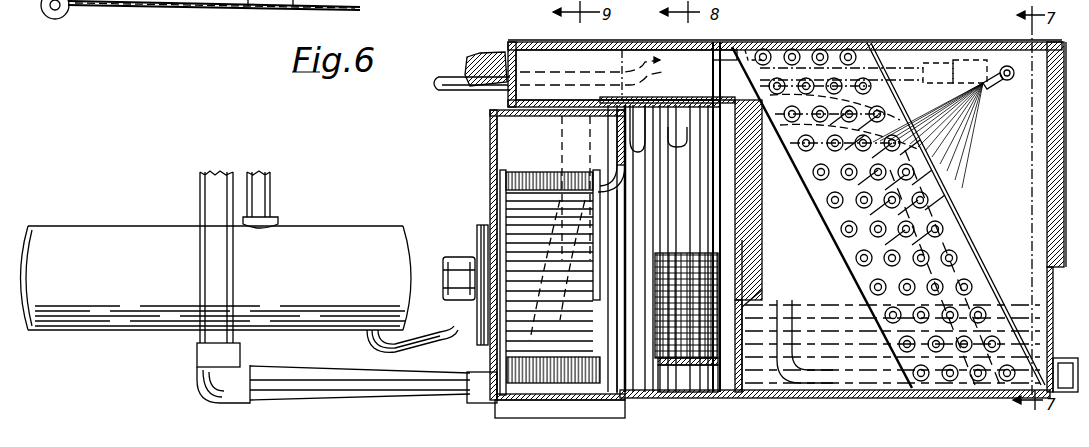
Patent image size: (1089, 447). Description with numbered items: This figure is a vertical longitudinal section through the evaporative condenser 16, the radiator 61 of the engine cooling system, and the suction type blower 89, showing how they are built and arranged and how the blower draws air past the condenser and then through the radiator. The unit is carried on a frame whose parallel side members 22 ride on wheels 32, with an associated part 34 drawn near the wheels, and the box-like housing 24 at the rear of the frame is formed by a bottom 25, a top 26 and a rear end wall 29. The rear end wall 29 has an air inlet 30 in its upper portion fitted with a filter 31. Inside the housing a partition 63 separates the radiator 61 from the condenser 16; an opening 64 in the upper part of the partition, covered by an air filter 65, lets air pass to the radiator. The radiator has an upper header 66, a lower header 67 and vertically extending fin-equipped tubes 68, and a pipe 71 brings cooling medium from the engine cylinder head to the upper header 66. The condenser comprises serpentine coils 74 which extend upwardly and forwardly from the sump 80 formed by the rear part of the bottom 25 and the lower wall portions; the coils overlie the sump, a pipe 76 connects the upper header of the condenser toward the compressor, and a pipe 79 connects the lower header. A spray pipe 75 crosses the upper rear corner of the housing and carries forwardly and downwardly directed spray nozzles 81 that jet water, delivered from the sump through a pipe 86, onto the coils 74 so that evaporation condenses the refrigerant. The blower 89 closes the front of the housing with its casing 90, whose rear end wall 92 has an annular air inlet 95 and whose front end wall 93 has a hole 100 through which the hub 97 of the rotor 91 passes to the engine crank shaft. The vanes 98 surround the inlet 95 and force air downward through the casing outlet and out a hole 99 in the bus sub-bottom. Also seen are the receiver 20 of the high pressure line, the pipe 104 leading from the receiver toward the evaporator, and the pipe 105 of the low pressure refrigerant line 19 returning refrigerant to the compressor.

The evaporative condenser 16 is at (972, 234).
The low pressure refrigerant line 19 is at (841, 238).
The receiver 20 is at (216, 278).
The side members 22 is at (249, 3).
The box-like housing 24 is at (948, 196).
The bottom 25 is at (917, 388).
The top 26 is at (938, 42).
The rear end wall 29 is at (1048, 295).
The air inlet 30 is at (1047, 256).
The filter 31 is at (1052, 180).
The wheels 32 is at (47, 10).
The shaft 34 is at (63, 12).
The radiator 61 is at (665, 245).
The partition 63 is at (733, 362).
The opening 64 is at (742, 266).
The air filter 65 is at (722, 238).
The upper header 66 is at (538, 60).
The lower header 67 is at (672, 383).
The fin-equipped tubes 68 is at (667, 302).
The pipe 71 is at (478, 58).
The serpentine coils 74 is at (870, 285).
The spray pipe 75 is at (1010, 70).
The pipe 76 is at (738, 46).
The pipe 79 is at (832, 382).
The sump 80 is at (768, 382).
The spray nozzles 81 is at (992, 88).
The pipe 86 is at (438, 89).
The blower 89 is at (492, 157).
The casing 90 is at (490, 170).
The rotor 91 is at (497, 203).
The rear end wall 92 is at (587, 134).
The front end wall 93 is at (492, 120).
The annular air inlet 95 is at (667, 184).
The hub 97 is at (500, 240).
The vanes 98 is at (470, 245).
The hole 99 is at (550, 188).
The hole 100 is at (493, 222).
The pipe 104 is at (272, 200).
The pipe 105 is at (205, 202).